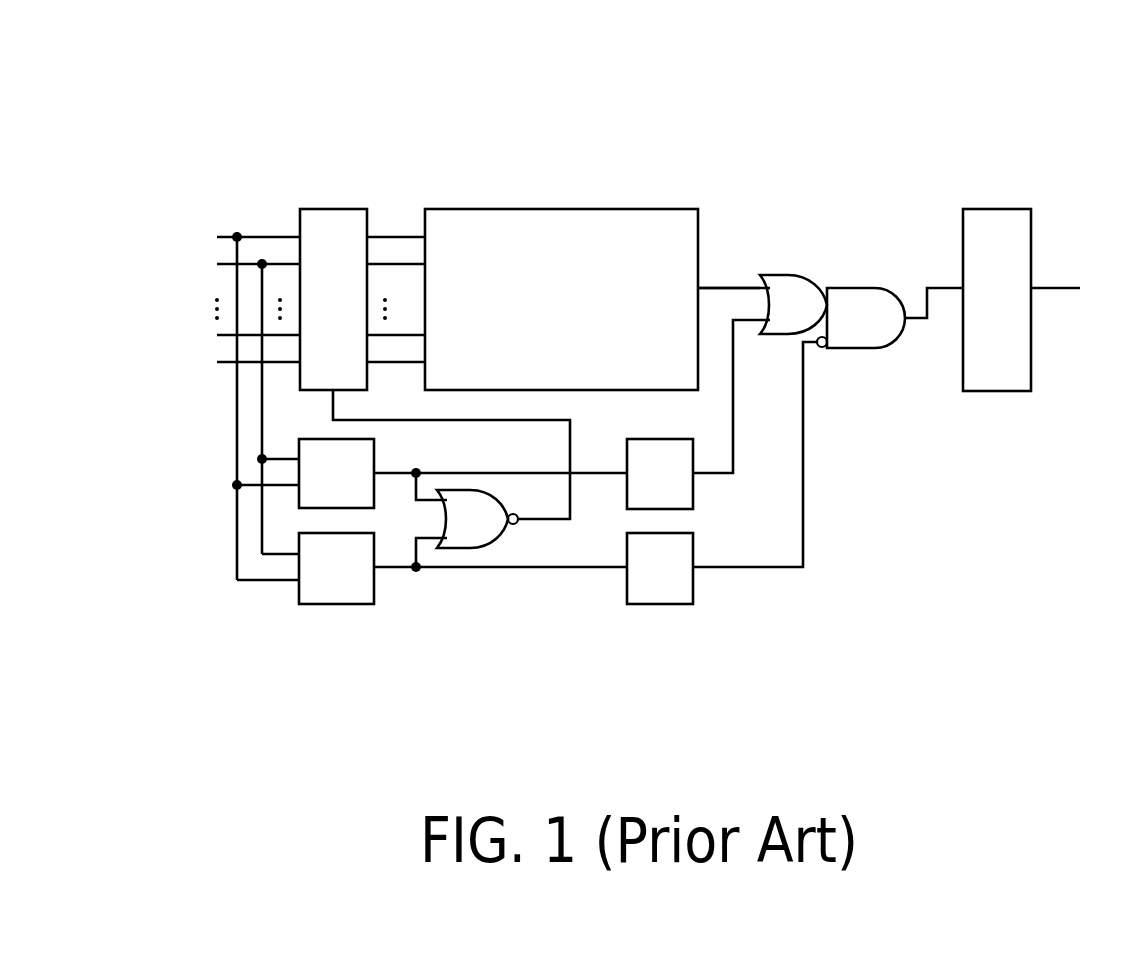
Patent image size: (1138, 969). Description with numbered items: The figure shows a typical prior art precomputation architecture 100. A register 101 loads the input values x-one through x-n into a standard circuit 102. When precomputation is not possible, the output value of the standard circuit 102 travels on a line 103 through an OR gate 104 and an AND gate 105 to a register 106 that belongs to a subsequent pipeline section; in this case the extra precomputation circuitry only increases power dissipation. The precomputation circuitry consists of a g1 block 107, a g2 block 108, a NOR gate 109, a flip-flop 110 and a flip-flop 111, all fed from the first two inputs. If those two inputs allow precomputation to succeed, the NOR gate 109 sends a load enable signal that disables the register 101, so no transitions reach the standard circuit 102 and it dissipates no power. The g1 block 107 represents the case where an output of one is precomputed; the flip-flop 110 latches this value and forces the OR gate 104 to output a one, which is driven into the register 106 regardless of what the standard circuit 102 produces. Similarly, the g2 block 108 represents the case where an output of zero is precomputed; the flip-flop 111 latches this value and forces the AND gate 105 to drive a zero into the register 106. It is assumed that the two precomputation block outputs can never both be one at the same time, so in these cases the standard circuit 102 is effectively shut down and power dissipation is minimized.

The prior art circuit 100 is at (60, 38).
The register 101 is at (316, 209).
The standard circuit 102 is at (568, 209).
The line 103 is at (718, 284).
The OR gate 104 is at (803, 275).
The AND gate 105 is at (862, 288).
The register 106 is at (1034, 222).
The g1 block 107 is at (375, 448).
The g2 block 108 is at (375, 592).
The NOR gate 109 is at (500, 540).
The flip-flop 110 is at (693, 490).
The flip-flop 111 is at (693, 587).